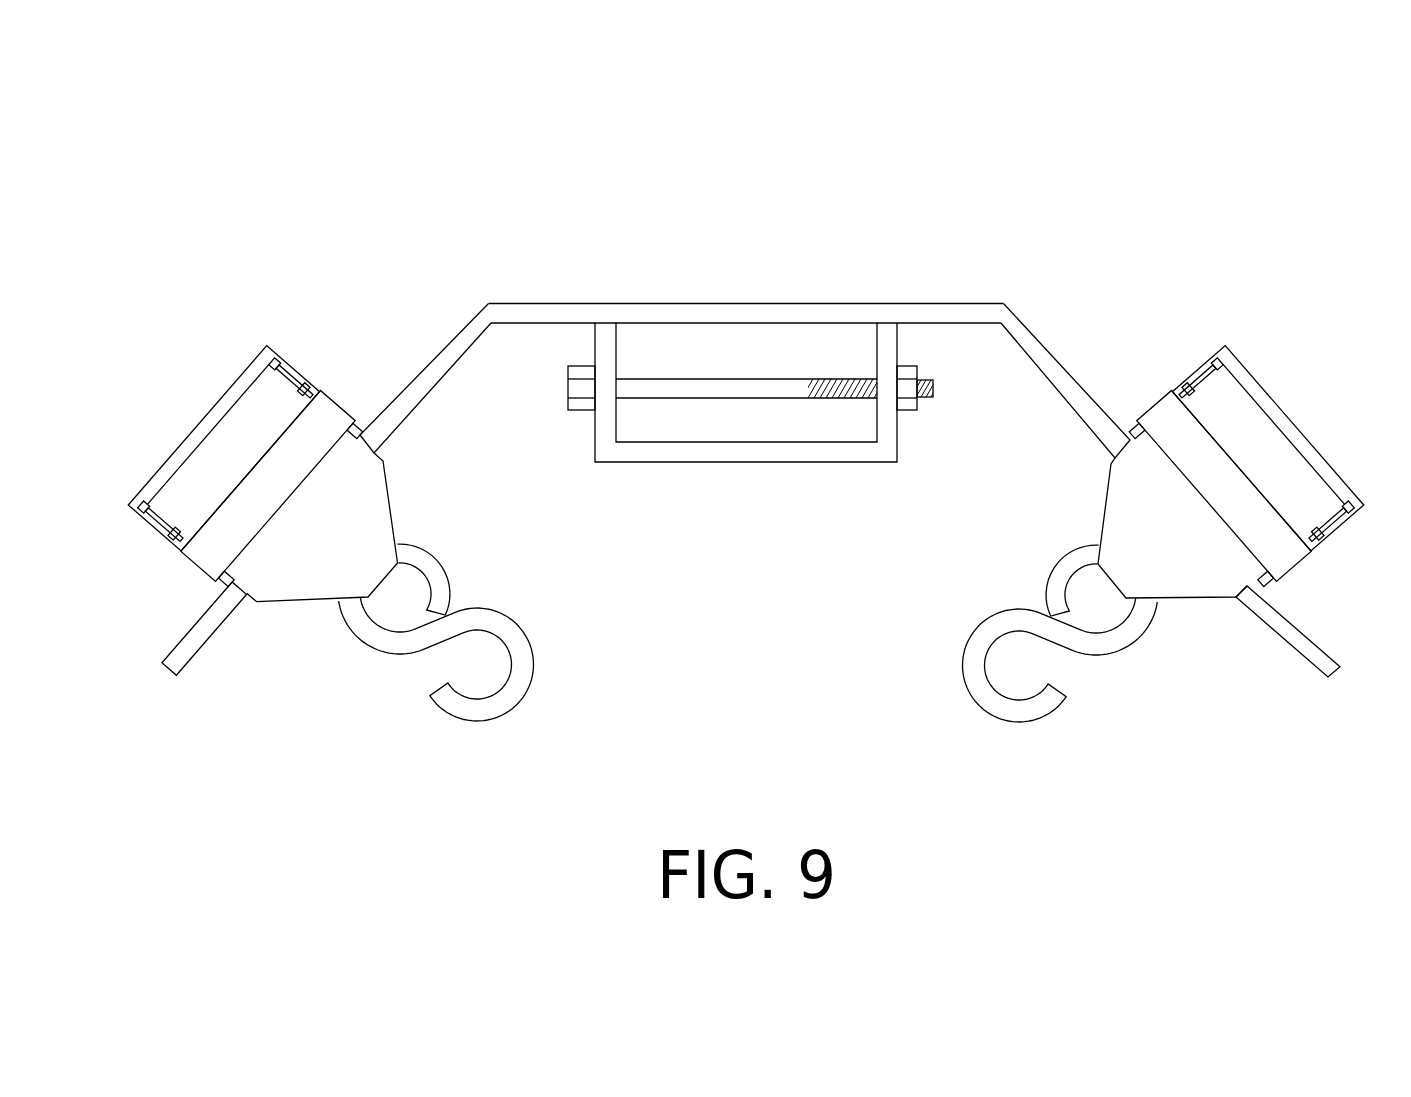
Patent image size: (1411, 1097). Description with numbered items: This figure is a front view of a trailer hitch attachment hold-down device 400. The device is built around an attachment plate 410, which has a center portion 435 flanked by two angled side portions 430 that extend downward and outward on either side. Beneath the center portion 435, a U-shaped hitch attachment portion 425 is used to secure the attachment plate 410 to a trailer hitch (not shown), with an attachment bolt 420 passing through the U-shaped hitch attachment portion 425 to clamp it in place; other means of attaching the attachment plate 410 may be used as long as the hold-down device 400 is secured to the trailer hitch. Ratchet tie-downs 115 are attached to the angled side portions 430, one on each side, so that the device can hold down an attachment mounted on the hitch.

The trailer hitch attachment hold-down device 400 is at (305, 153).
The attachment plate 410 is at (497, 312).
The center portion 435 is at (707, 302).
The U-shaped hitch attachment portion 425 is at (802, 455).
The attachment bolt 420 is at (573, 392).
The ratchet tie-down 115 is at (250, 428).
The side portion 430 is at (200, 618).